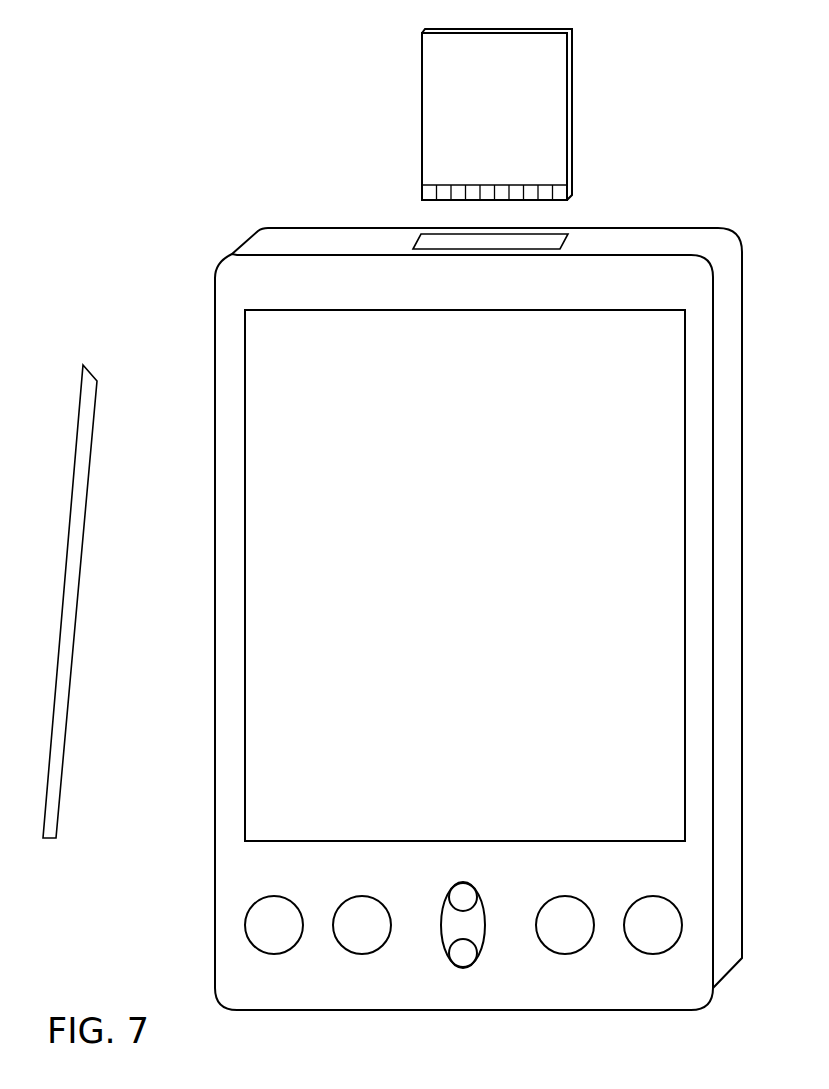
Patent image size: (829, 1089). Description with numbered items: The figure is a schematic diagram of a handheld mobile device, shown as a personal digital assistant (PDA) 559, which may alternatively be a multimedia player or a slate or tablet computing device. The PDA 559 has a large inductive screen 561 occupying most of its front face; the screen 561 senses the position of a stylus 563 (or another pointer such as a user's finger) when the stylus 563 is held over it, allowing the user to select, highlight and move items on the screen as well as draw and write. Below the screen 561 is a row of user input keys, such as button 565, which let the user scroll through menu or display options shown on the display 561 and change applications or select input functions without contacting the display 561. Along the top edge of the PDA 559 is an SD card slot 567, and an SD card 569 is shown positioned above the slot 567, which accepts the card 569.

The personal digital assistant 559 is at (178, 420).
The inductive screen 561 is at (436, 568).
The stylus 563 is at (55, 840).
The button 565 is at (262, 918).
The SD card slot 567 is at (495, 242).
The SD card 569 is at (422, 116).